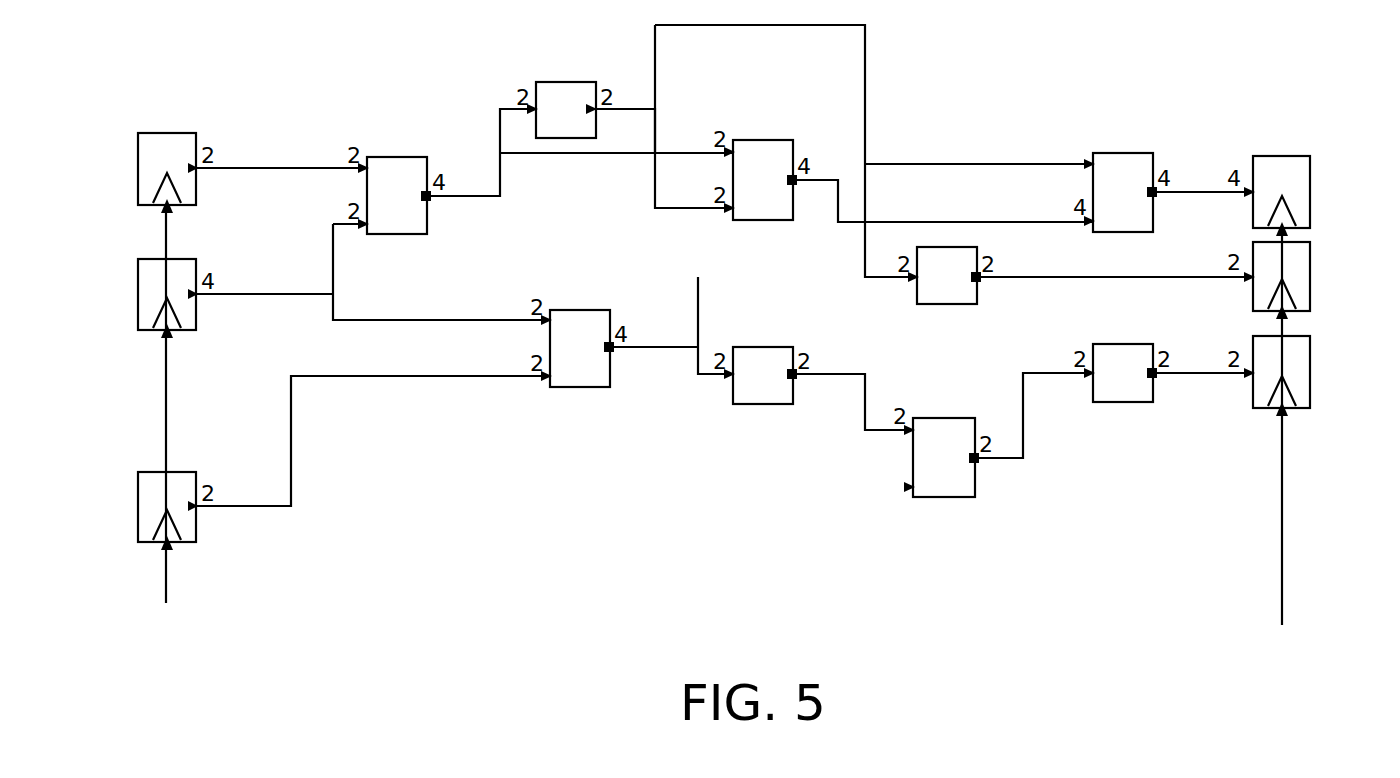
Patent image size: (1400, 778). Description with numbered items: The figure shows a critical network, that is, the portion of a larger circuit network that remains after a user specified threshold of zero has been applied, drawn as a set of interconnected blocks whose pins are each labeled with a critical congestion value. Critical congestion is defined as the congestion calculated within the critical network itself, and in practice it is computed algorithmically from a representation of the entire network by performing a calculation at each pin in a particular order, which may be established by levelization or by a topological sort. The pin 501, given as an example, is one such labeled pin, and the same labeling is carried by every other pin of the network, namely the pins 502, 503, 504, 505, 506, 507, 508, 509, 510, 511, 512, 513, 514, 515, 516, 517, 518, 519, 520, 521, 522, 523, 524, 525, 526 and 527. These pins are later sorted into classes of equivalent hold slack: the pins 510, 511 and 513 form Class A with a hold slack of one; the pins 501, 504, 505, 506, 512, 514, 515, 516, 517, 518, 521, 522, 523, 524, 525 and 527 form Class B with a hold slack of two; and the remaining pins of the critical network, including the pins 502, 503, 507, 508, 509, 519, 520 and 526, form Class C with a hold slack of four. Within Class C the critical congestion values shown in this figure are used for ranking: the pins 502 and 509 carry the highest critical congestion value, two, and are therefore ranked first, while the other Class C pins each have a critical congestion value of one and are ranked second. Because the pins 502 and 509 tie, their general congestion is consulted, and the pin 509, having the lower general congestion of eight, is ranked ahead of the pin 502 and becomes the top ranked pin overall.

The pin 501 is at (192, 168).
The pin 502 is at (192, 294).
The pin 503 is at (192, 506).
The pin 504 is at (370, 168).
The pin 505 is at (370, 224).
The pin 506 is at (427, 198).
The pin 507 is at (552, 320).
The pin 508 is at (552, 378).
The pin 509 is at (610, 348).
The pin 510 is at (538, 109).
The pin 511 is at (596, 109).
The pin 512 is at (736, 152).
The pin 513 is at (736, 208).
The pin 514 is at (792, 180).
The pin 515 is at (736, 374).
The pin 516 is at (794, 376).
The pin 517 is at (915, 430).
The pin 518 is at (976, 460).
The pin 519 is at (919, 278).
The pin 520 is at (977, 278).
The pin 521 is at (1096, 222).
The pin 522 is at (1152, 192).
The pin 523 is at (1095, 374).
The pin 524 is at (1153, 375).
The pin 525 is at (1254, 192).
The pin 526 is at (1254, 277).
The pin 527 is at (1254, 373).